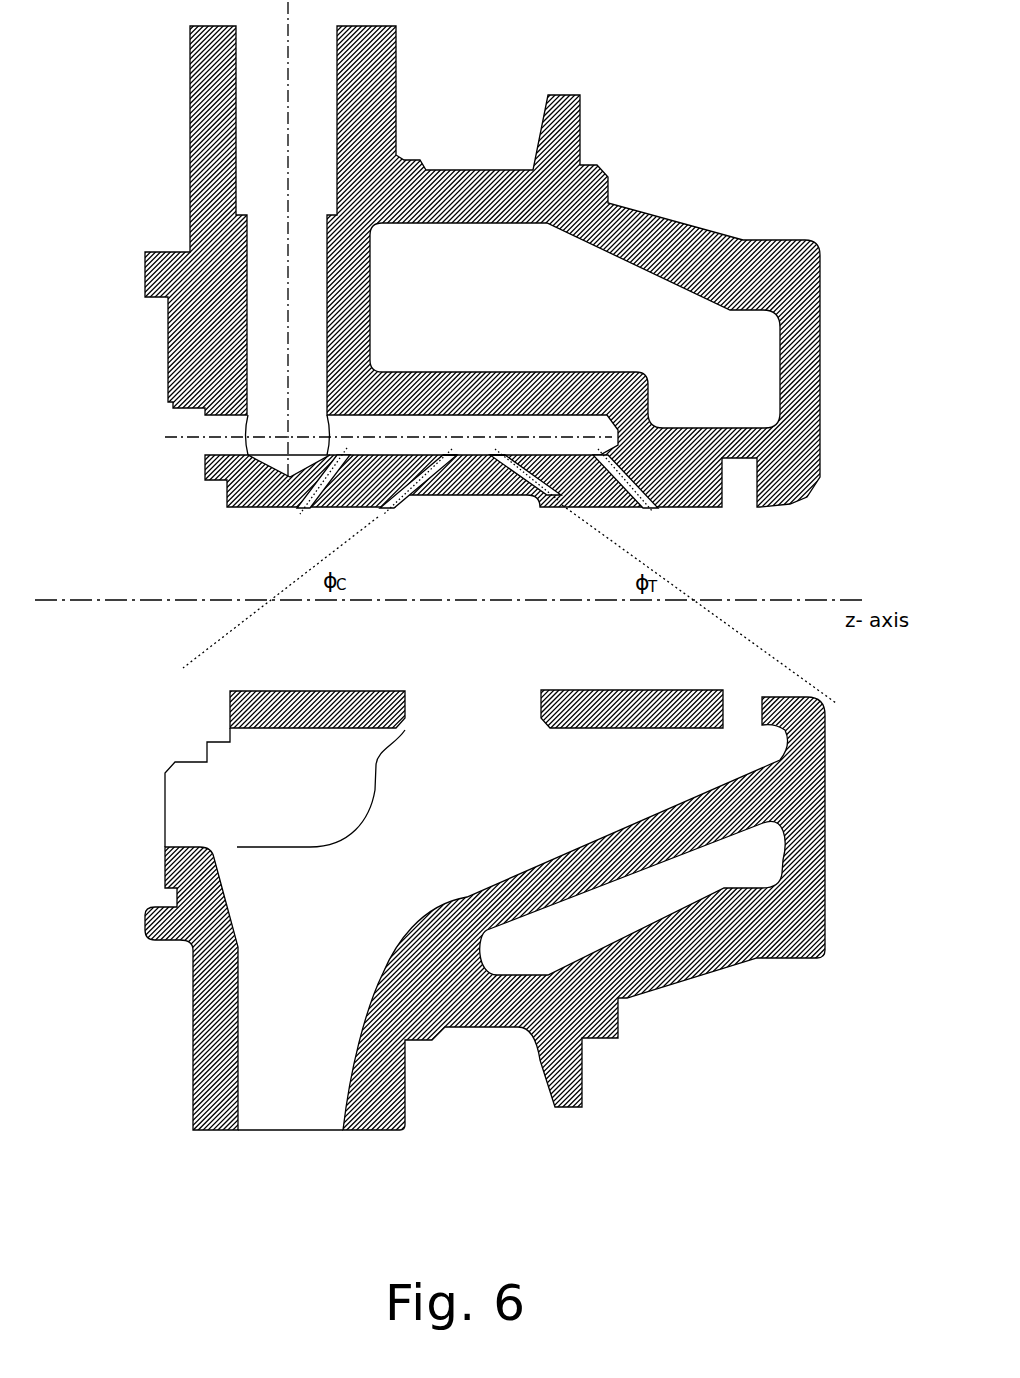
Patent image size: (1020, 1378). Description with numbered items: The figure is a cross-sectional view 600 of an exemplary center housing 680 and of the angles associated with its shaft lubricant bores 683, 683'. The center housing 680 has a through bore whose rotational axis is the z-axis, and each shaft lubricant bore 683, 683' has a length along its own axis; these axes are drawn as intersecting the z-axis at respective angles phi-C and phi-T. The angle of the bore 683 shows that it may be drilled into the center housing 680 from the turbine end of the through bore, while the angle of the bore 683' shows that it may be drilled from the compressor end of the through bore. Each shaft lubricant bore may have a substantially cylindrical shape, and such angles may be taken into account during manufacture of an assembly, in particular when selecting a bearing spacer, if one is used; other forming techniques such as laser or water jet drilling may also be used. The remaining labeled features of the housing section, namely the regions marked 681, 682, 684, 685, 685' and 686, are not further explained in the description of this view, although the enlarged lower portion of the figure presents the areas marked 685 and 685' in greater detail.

The rocket engine injector assembly 600 is at (113, 36).
The center housing 680 is at (775, 286).
The central bore 681 is at (343, 455).
The annular cavity 682 is at (609, 455).
The shaft lubricant bore 683 is at (532, 381).
The shaft lubricant bore 683' is at (483, 381).
The outer nozzle channel 684 is at (655, 512).
The nozzle channel 685 is at (606, 588).
The nozzle channel 685' is at (314, 648).
The inner nozzle channel 686 is at (297, 510).